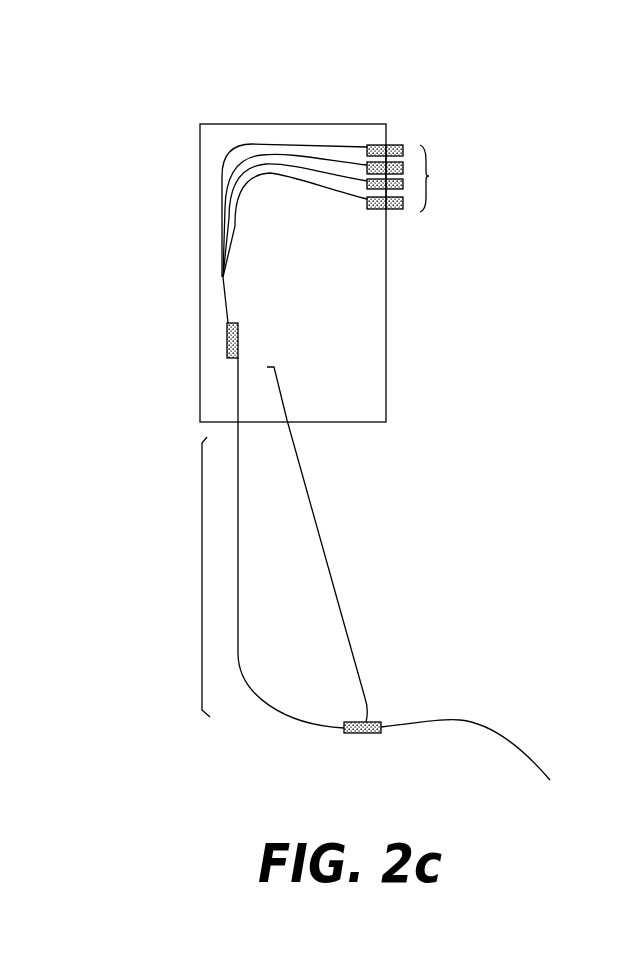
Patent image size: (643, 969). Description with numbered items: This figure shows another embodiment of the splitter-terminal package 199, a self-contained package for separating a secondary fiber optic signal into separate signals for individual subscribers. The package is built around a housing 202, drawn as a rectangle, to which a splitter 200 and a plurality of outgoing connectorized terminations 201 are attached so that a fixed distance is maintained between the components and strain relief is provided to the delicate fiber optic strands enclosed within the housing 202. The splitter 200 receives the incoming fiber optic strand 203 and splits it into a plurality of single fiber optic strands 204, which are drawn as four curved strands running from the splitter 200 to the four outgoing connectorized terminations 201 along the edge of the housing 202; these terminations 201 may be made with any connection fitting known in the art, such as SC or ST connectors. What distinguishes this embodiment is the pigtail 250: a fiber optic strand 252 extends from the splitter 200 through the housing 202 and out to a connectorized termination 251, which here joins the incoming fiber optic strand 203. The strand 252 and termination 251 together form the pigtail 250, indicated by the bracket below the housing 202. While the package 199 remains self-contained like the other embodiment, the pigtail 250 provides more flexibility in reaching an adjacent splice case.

The splitter-terminal package 199 is at (296, 102).
The outgoing connectorized terminations 201 is at (429, 176).
The single fiber optic strands 204 is at (223, 280).
The splitter 200 is at (227, 339).
The housing 202 is at (386, 382).
The pigtail 250 is at (200, 559).
The fiber optic strand 252 is at (323, 537).
The connectorized termination 251 is at (363, 733).
The incoming fiber optic strand 203 is at (497, 725).